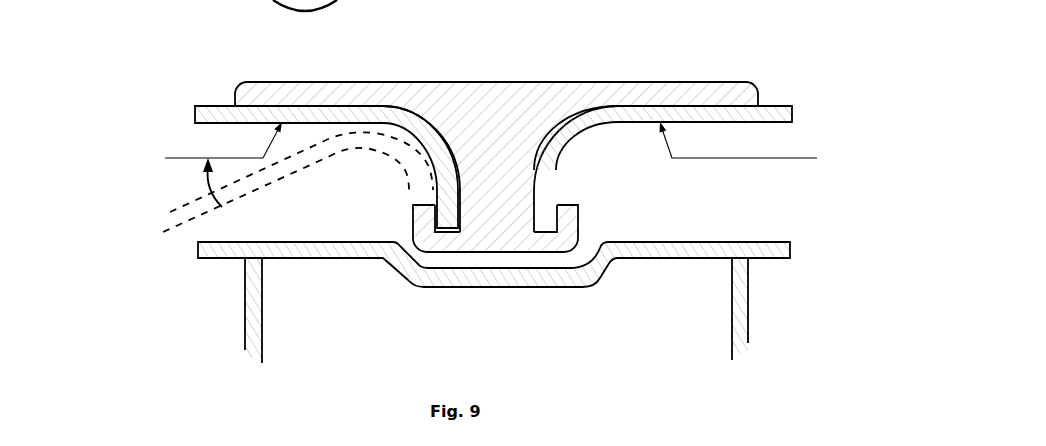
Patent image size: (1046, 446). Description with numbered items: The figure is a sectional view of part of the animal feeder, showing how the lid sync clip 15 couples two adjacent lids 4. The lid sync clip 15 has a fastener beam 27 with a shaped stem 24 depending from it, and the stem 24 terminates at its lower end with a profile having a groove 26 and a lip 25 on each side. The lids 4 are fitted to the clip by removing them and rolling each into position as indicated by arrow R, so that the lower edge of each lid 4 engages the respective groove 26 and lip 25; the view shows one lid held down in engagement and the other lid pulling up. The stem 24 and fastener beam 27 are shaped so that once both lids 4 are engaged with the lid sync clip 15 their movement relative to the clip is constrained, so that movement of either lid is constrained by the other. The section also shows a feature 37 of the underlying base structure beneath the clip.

The lid 4 is at (230, 116).
The lid sync clip 15 is at (487, 88).
The stem 24 is at (510, 173).
The lip 25 is at (422, 216).
The groove 26 is at (441, 242).
The fastener beam 27 is at (648, 92).
The recess in base plate 37 is at (423, 272).